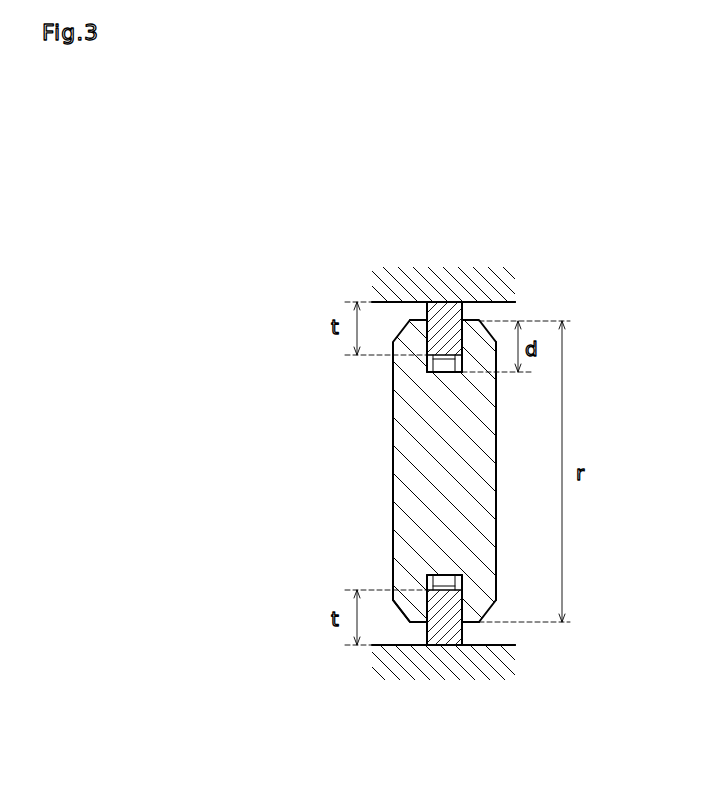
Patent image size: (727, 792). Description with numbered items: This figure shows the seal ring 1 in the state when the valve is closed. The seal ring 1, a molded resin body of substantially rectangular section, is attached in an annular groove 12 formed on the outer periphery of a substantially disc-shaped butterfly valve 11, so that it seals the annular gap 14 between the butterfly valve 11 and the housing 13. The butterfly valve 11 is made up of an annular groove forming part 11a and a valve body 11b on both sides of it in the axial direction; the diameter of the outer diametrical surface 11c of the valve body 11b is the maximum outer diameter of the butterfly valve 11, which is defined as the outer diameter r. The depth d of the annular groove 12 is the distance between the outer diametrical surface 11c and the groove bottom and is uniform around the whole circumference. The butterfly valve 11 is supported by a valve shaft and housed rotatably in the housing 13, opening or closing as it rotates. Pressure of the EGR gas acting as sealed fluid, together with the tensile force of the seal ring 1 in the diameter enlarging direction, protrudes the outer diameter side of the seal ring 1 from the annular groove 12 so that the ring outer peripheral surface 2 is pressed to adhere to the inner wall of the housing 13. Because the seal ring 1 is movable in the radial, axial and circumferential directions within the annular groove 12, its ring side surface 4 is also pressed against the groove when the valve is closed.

The seal ring 1 is at (423, 630).
The ring outer peripheral surface 2 is at (445, 648).
The ring side surface 4 is at (470, 624).
The butterfly valve 11 is at (388, 461).
The annular groove forming part 11a is at (445, 543).
The valve body 11b is at (413, 599).
The outer diametrical surface 11c is at (463, 302).
The annular groove 12 is at (432, 355).
The housing 13 is at (448, 277).
The annular gap 14 is at (420, 312).